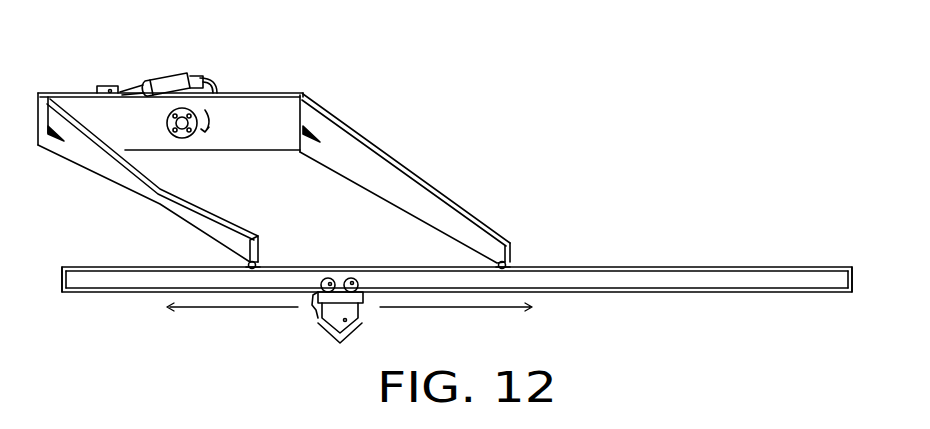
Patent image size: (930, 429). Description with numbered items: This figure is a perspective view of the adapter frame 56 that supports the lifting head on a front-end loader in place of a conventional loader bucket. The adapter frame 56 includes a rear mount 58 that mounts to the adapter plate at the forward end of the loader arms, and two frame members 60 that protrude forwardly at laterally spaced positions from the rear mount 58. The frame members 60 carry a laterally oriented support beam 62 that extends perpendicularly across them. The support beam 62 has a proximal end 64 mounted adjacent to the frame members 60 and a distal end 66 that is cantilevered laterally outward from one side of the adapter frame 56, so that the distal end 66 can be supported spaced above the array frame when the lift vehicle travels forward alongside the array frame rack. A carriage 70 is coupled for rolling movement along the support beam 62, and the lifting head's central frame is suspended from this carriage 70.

The adapter frame 56 is at (507, 127).
The rear mount 58 is at (253, 117).
The frame members 60 is at (160, 203).
The support beam 62 is at (617, 277).
The proximal end 64 is at (77, 282).
The distal end 66 is at (825, 283).
The carriage 70 is at (323, 313).